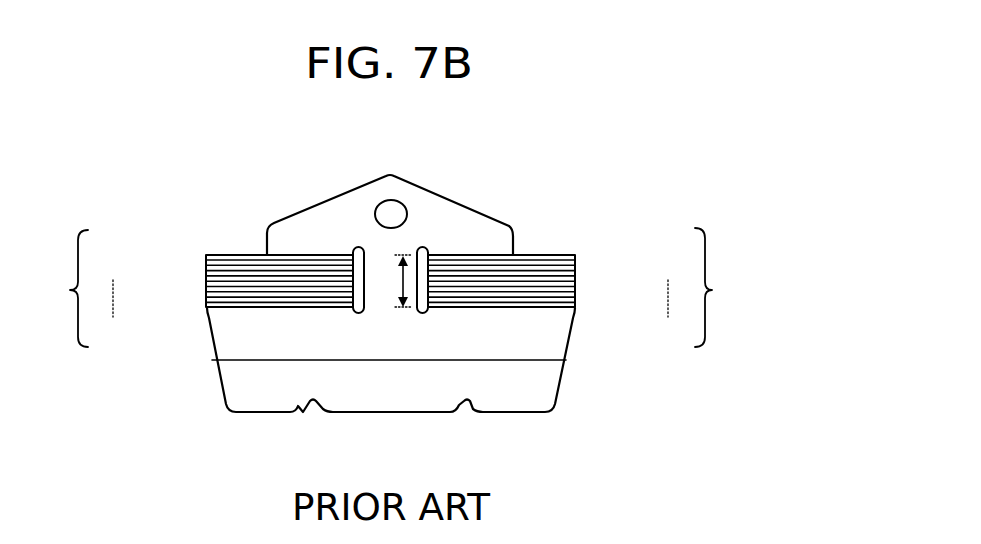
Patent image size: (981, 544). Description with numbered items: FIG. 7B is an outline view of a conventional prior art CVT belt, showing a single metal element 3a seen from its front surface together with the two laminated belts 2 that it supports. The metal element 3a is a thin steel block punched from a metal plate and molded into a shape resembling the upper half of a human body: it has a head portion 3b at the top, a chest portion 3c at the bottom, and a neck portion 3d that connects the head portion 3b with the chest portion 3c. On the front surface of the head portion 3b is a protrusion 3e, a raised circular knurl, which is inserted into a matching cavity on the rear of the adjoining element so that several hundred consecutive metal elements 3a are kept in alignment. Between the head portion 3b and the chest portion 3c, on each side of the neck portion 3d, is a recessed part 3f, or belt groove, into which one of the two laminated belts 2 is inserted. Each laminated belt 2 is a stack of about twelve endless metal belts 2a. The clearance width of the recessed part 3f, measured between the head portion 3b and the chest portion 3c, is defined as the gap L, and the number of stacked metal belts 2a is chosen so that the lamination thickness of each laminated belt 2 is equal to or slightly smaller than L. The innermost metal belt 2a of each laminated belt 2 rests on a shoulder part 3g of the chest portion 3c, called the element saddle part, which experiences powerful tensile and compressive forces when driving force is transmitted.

The laminated belt 2 is at (391, 287).
The metal belt 2a is at (206, 256).
The metal element 3a is at (476, 196).
The head portion 3b is at (343, 210).
The chest portion 3c is at (290, 400).
The neck portion 3d is at (376, 296).
The protrusion 3e is at (390, 212).
The recessed part 3f is at (250, 242).
The shoulder part 3g is at (278, 308).
The gap L is at (401, 286).